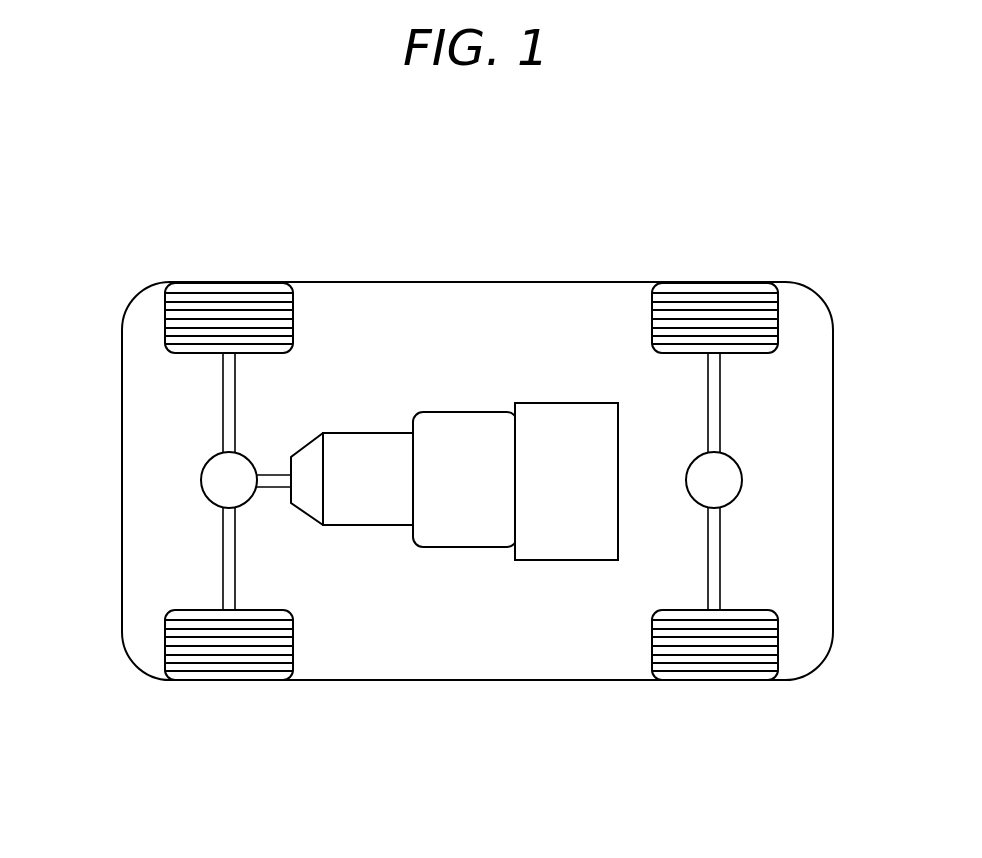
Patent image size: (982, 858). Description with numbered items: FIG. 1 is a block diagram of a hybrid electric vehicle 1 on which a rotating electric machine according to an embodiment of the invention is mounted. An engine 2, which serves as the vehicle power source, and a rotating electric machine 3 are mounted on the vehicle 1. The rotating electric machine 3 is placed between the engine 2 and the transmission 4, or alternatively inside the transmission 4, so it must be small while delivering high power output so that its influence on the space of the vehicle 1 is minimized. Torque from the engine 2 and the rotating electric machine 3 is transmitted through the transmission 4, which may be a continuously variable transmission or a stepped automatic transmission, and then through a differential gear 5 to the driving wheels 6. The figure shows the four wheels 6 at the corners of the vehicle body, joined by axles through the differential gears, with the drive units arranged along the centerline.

The vehicle 1 is at (803, 338).
The engine 2 is at (567, 403).
The rotating electric machine 3 is at (465, 412).
The transmission 4 is at (368, 525).
The differential gear 5 is at (210, 503).
The wheels 6 is at (219, 288).